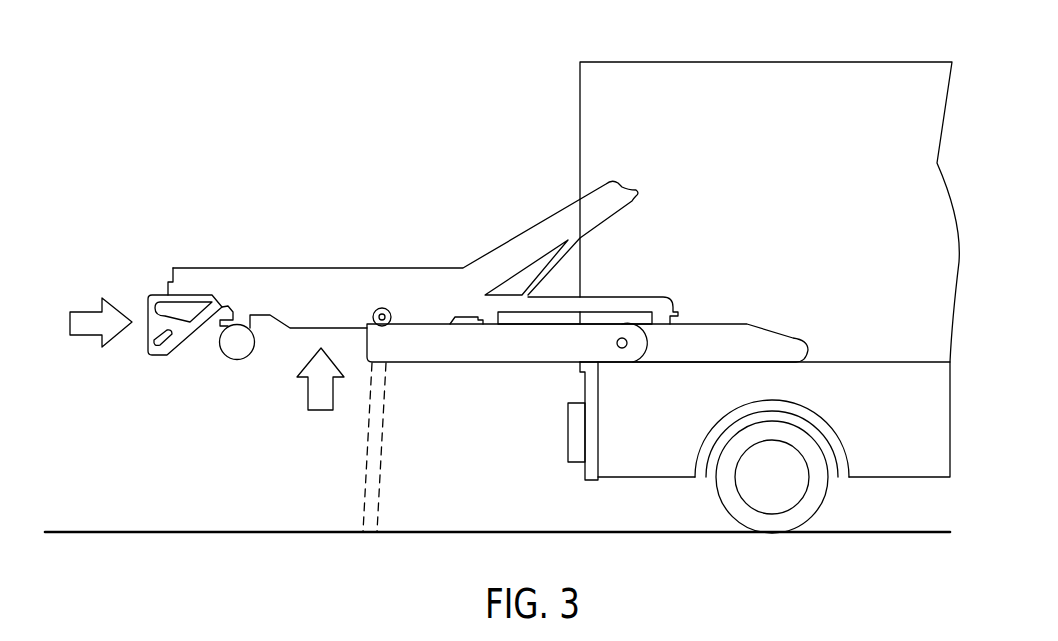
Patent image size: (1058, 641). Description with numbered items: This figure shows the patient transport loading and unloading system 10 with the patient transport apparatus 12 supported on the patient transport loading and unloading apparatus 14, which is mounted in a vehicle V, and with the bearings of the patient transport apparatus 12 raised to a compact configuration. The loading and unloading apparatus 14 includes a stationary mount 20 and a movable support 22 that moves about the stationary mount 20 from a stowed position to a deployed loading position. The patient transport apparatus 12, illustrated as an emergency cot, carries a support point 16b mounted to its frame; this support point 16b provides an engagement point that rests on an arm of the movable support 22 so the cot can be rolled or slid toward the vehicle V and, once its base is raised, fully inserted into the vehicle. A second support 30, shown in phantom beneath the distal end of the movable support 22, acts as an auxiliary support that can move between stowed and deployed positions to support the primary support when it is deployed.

The patient transport loading and unloading system 10 is at (515, 80).
The vehicle V is at (748, 82).
The patient transport apparatus 12 is at (338, 250).
The patient transport loading and unloading apparatus 14 is at (735, 312).
The support point 16b is at (388, 308).
The stationary mount 20 is at (687, 352).
The movable support 22 is at (573, 342).
The second support 30 is at (367, 472).